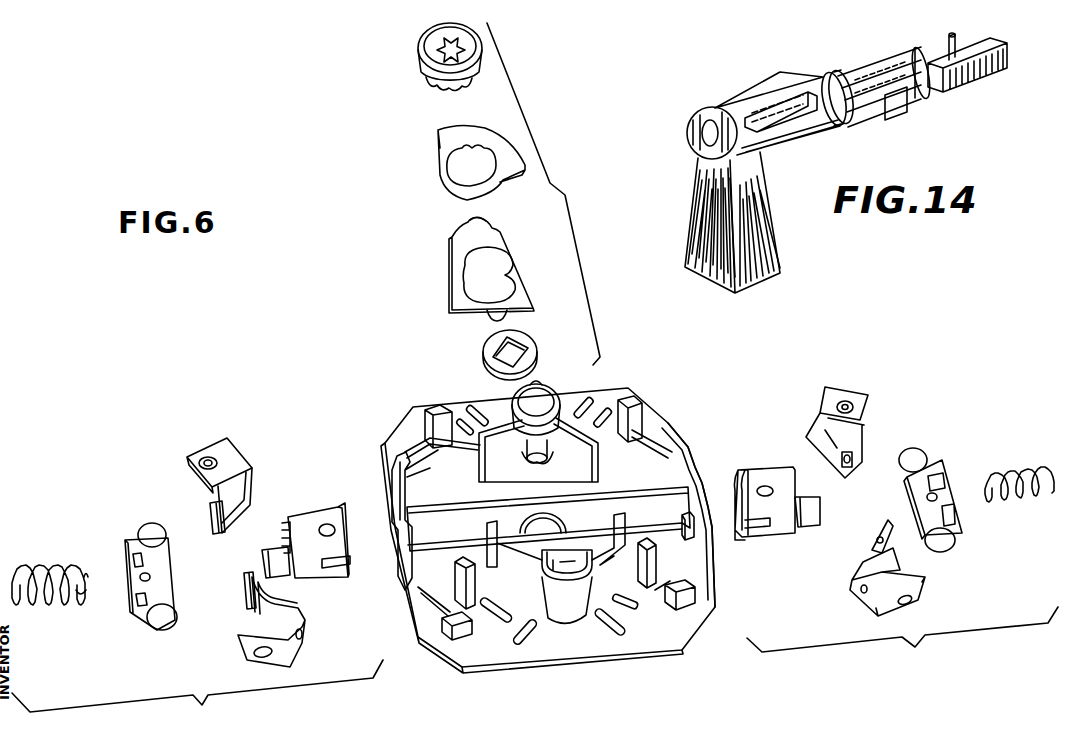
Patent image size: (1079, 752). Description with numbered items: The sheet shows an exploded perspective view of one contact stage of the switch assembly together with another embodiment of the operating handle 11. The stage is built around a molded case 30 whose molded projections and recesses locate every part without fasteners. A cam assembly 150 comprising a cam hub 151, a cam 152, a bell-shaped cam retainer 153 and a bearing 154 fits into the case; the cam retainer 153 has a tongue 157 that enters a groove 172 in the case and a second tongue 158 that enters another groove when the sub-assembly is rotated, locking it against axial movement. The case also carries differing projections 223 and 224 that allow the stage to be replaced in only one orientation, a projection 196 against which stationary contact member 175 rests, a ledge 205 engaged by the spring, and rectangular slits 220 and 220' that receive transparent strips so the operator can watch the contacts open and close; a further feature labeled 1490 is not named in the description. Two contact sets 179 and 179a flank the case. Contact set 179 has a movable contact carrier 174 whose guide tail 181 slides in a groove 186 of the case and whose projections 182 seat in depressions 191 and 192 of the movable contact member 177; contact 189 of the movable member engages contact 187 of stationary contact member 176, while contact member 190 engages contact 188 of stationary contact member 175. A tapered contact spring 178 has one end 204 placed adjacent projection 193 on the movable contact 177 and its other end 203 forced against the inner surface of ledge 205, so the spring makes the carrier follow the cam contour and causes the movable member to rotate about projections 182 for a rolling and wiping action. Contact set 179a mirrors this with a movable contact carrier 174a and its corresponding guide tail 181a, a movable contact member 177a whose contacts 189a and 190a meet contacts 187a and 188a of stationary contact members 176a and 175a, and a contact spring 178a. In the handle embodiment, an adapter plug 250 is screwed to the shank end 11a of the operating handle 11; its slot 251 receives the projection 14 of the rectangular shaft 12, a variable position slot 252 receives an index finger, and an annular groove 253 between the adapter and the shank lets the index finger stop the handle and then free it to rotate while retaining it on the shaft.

In FIG. 6, the molded case 30 is at (402, 394).
In FIG. 6, the cam assembly 150 is at (546, 194).
In FIG. 6, the cam hub 151 is at (420, 56).
In FIG. 6, the cam 152 is at (437, 177).
In FIG. 6, the cam retainer 153 is at (452, 272).
In FIG. 6, the tongue 157 is at (466, 223).
In FIG. 6, the tongue 158 is at (488, 318).
In FIG. 6, the bearing 154 is at (490, 364).
In FIG. 6, the projection 224 is at (546, 394).
In FIG. 6, the groove 172 is at (543, 458).
In FIG. 6, the projection 196 is at (600, 398).
In FIG. 6, the groove 186 is at (440, 510).
In FIG. 6, the arched cradle 1490 is at (548, 513).
In FIG. 6, the projection 223 is at (590, 615).
In FIG. 6, the slit 220 is at (669, 426).
In FIG. 6, the slit 220' is at (407, 444).
In FIG. 6, the ledge 205 is at (708, 480).
In FIG. 6, the spring end 203 is at (28, 568).
In FIG. 6, the spring end 204 is at (88, 577).
In FIG. 6, the contact spring 178 is at (62, 592).
In FIG. 6, the movable contact member 177 is at (125, 542).
In FIG. 6, the contact 189 is at (155, 523).
In FIG. 6, the contact member 190 is at (177, 617).
In FIG. 6, the depression 191 is at (130, 557).
In FIG. 6, the depression 192 is at (136, 599).
In FIG. 6, the projection 193 is at (152, 575).
In FIG. 6, the stationary contact member 176 is at (233, 442).
In FIG. 6, the contact 187 is at (210, 526).
In FIG. 6, the movable contact carrier 174 is at (328, 578).
In FIG. 6, the guide tail 181 is at (267, 553).
In FIG. 6, the projections 182 is at (282, 528).
In FIG. 6, the contact 188 is at (247, 591).
In FIG. 6, the stationary contact member 175 is at (303, 641).
In FIG. 6, the contact set 179 is at (197, 695).
In FIG. 6, the stationary contact member 176a is at (850, 388).
In FIG. 6, the contact 187a is at (855, 455).
In FIG. 6, the movable contact carrier 174a is at (765, 468).
In FIG. 6, the terminal tab 181a is at (820, 516).
In FIG. 6, the movable contact member 177a is at (950, 450).
In FIG. 6, the contact 189a is at (900, 468).
In FIG. 6, the contact 190a is at (950, 555).
In FIG. 6, the contact 188a is at (912, 513).
In FIG. 6, the stationary contact member 175a is at (855, 600).
In FIG. 6, the contact spring 178a is at (1019, 495).
In FIG. 6, the contact set 179a is at (902, 640).
In FIG. 14, the operating handle 11 is at (690, 230).
In FIG. 14, the shank end 11a is at (826, 84).
In FIG. 14, the annular groove 253 is at (838, 130).
In FIG. 14, the adapter plug 250 is at (936, 101).
In FIG. 14, the slot 251 is at (889, 66).
In FIG. 14, the variable position slot 252 is at (887, 96).
In FIG. 14, the shaft 12 is at (998, 74).
In FIG. 14, the projection 14 is at (957, 55).